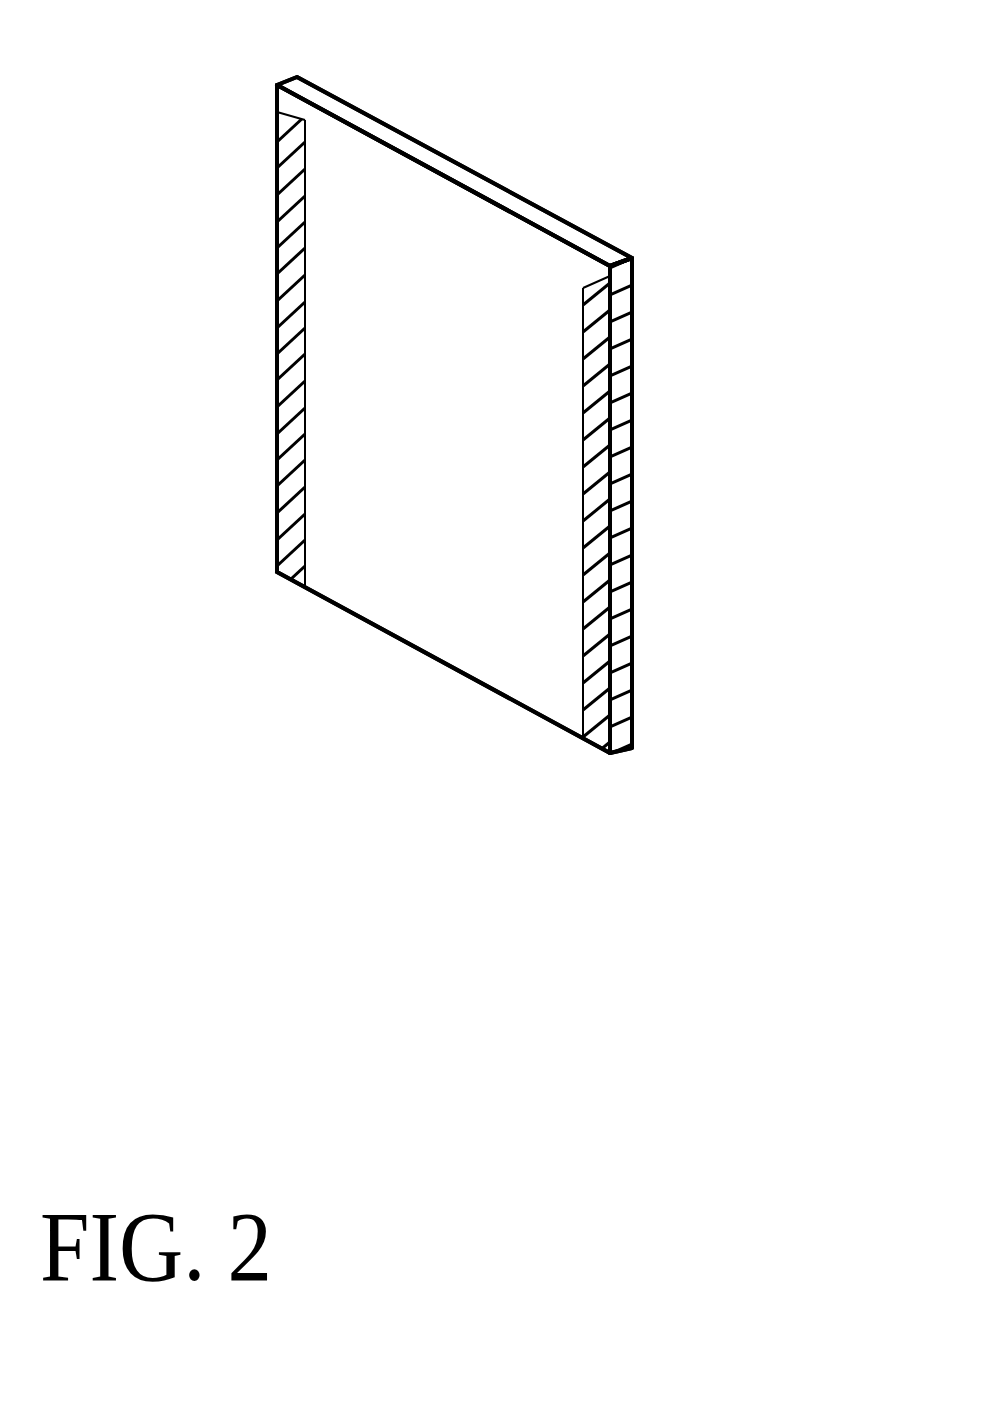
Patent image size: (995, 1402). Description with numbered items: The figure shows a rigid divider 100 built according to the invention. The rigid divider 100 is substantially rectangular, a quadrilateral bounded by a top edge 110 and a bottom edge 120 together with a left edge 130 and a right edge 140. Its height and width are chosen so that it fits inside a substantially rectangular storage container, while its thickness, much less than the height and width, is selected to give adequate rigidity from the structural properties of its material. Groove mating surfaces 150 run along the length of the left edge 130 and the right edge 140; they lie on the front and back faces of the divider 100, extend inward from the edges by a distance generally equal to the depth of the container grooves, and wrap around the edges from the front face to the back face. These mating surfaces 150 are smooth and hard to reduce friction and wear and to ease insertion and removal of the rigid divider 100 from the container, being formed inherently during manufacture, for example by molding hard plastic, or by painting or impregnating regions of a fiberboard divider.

The rigid divider 100 is at (628, 203).
The top edge 110 is at (440, 162).
The bottom edge 120 is at (480, 683).
The left edge 130 is at (277, 408).
The right edge 140 is at (624, 735).
The groove mating surfaces 150 is at (73, 633).